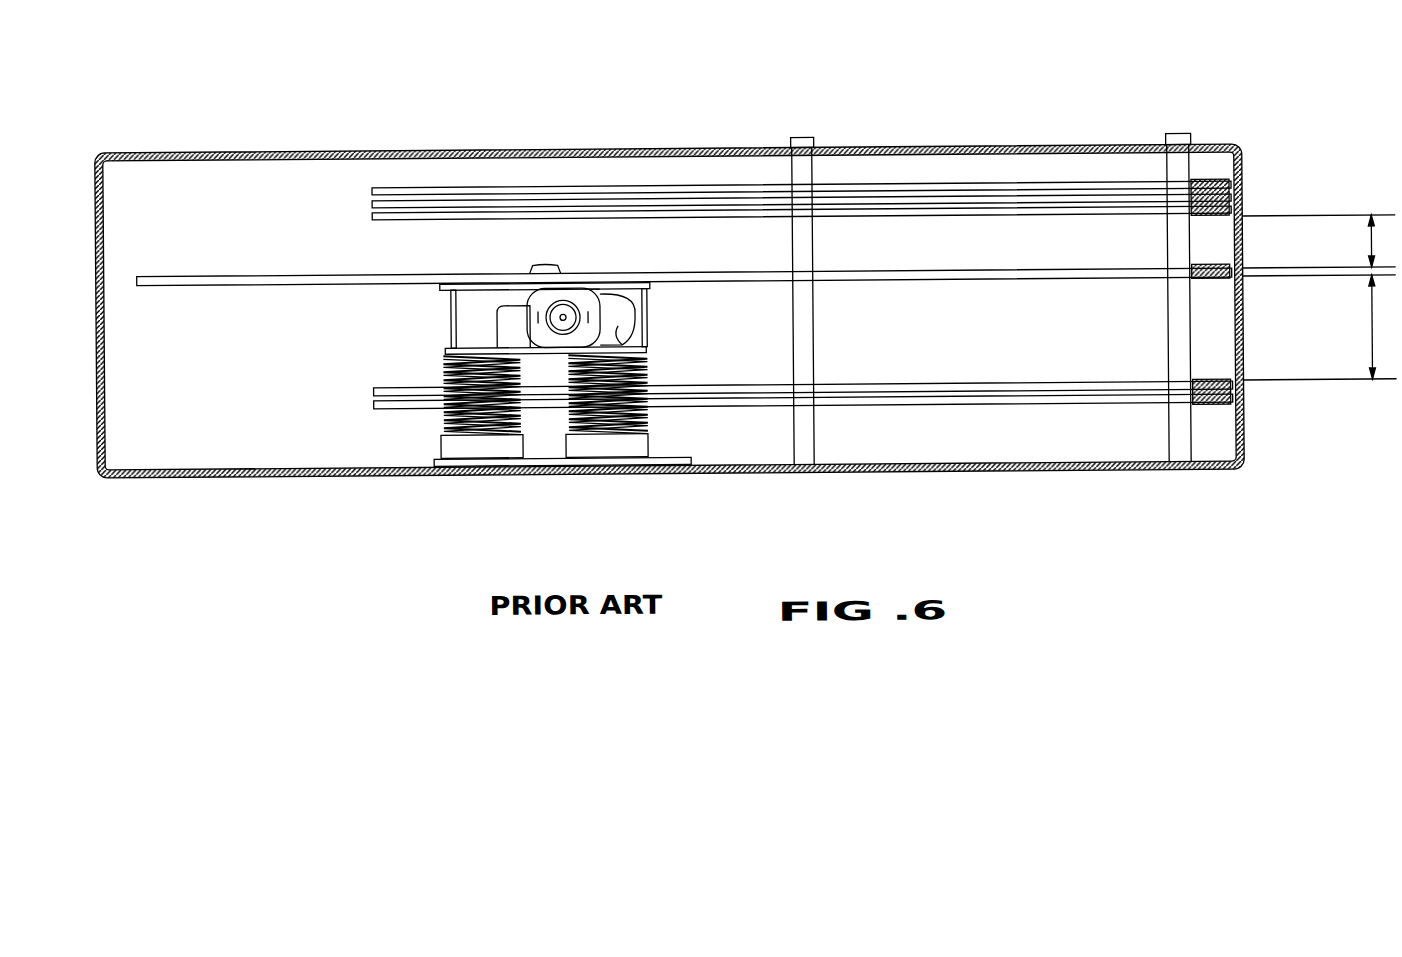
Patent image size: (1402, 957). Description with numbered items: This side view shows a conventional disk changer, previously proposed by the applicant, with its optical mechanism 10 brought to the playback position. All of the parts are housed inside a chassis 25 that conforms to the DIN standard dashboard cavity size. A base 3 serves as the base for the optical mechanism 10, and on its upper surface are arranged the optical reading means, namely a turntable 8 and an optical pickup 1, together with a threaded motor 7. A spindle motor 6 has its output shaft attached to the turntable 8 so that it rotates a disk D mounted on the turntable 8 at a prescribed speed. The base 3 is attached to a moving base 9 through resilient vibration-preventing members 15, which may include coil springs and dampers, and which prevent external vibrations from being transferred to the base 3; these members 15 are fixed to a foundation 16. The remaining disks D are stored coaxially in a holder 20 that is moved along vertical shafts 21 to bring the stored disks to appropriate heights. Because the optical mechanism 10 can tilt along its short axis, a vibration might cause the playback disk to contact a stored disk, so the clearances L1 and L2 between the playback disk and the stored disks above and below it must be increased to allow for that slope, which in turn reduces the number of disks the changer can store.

The chassis 25 is at (291, 153).
The vertical shafts 21 is at (814, 331).
The disk D is at (373, 218).
The optical mechanism 10 is at (392, 311).
The optical pickup 1 is at (458, 319).
The turntable 8 is at (551, 267).
The threaded motor 7 is at (593, 293).
The spindle motor 6 is at (502, 329).
The base 3 is at (641, 339).
The vibration-preventing members 15 is at (443, 420).
The foundation 16 is at (513, 453).
The moving base 9 is at (690, 463).
The holder 20 is at (1231, 192).
The clearance L1 is at (1318, 245).
The clearance L2 is at (1320, 327).